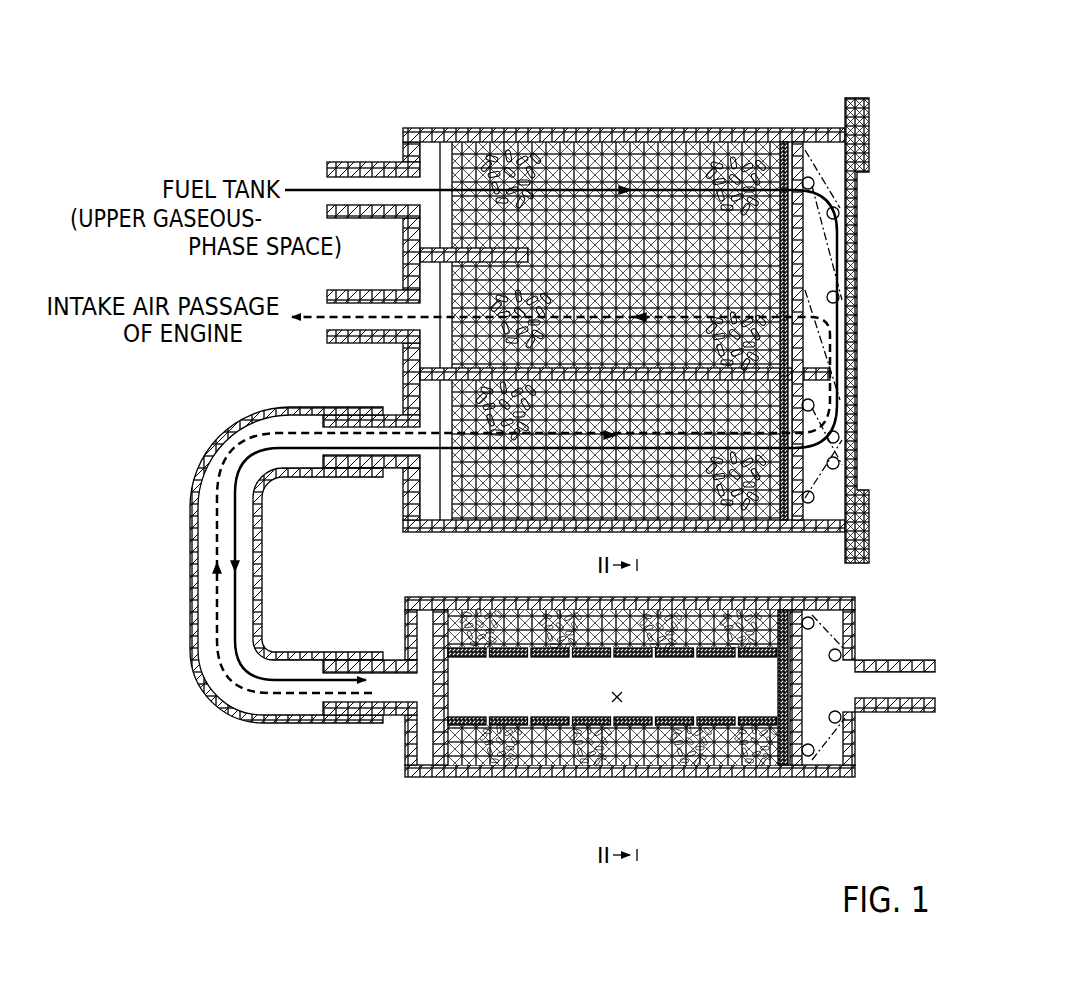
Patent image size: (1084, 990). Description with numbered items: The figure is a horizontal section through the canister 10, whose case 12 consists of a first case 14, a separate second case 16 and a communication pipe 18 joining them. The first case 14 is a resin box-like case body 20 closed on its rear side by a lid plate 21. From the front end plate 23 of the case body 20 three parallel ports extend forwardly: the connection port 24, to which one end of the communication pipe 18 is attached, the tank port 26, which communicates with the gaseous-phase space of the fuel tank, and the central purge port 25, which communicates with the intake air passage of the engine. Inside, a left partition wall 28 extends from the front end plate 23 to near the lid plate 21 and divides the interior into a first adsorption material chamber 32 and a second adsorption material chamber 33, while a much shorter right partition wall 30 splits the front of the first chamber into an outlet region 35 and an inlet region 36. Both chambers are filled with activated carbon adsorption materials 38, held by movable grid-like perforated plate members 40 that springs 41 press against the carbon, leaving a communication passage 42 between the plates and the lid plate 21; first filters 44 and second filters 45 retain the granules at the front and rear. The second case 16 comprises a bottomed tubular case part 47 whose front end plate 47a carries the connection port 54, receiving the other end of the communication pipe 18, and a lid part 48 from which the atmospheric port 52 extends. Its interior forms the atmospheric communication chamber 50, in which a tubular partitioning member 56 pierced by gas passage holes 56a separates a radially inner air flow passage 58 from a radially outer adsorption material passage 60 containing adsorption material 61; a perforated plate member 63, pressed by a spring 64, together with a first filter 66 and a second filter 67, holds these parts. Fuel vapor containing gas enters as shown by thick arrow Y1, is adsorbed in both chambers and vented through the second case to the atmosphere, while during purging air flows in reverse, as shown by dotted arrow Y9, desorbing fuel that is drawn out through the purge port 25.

The canister 10 is at (381, 78).
The case 12 is at (705, 95).
The first case 14 is at (621, 108).
The second case 16 is at (670, 787).
The communication pipe 18 is at (232, 420).
The case body 20 is at (581, 127).
The lid plate 21 is at (857, 270).
The front end plate 23 is at (410, 392).
The connection port 24 is at (365, 470).
The purge port 25 is at (330, 340).
The tank port 26 is at (362, 163).
The left partition wall 28 is at (625, 394).
The right partition wall 30 is at (530, 256).
The first adsorption material chamber 32 is at (680, 140).
The second adsorption material chamber 33 is at (540, 495).
The outlet region 35 is at (458, 278).
The inlet region 36 is at (481, 140).
The adsorption materials 38 is at (535, 140).
The perforated plate members 40 is at (802, 158).
The springs 41 is at (842, 195).
The communication passage 42 is at (835, 330).
The first filters 44 is at (447, 140).
The second filters 45 is at (788, 140).
The case part 47 is at (572, 780).
The front end plate 47a is at (405, 748).
The lid part 48 is at (855, 745).
The atmospheric communication chamber 50 is at (745, 752).
The atmospheric port 52 is at (900, 660).
The connection port 54 is at (365, 660).
The partitioning member 56 is at (492, 765).
The gas passage holes 56a is at (555, 718).
The air flow passage 58 is at (627, 740).
The adsorption material passage 60 is at (712, 760).
The adsorption material 61 is at (700, 614).
The perforated plate member 63 is at (795, 762).
The spring 64 is at (810, 757).
The first filter 66 is at (440, 612).
The second filter 67 is at (782, 752).
The thick arrow Y1 is at (300, 188).
The dotted arrow Y9 is at (240, 700).